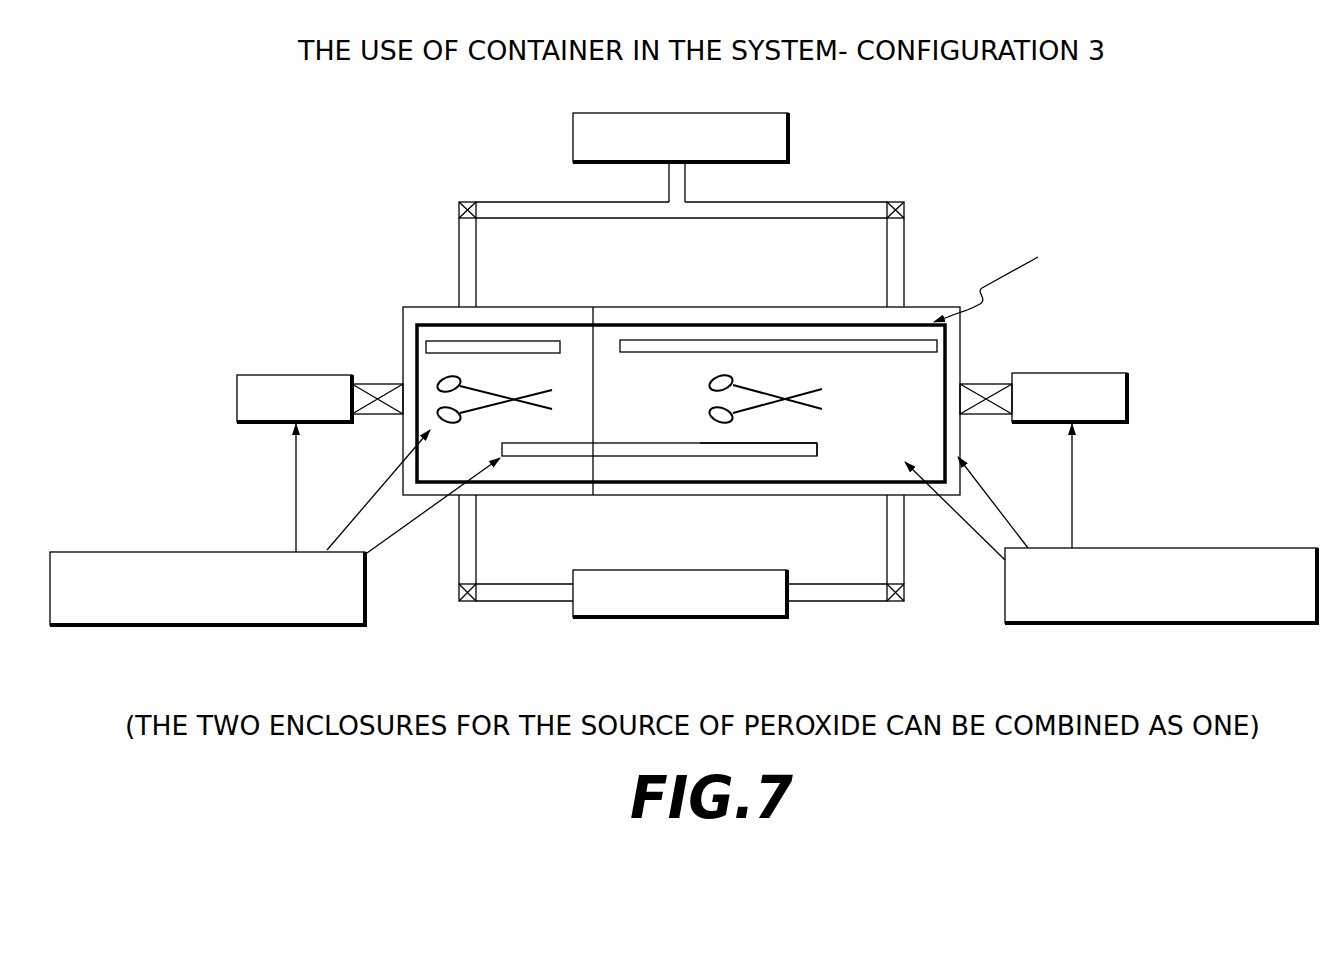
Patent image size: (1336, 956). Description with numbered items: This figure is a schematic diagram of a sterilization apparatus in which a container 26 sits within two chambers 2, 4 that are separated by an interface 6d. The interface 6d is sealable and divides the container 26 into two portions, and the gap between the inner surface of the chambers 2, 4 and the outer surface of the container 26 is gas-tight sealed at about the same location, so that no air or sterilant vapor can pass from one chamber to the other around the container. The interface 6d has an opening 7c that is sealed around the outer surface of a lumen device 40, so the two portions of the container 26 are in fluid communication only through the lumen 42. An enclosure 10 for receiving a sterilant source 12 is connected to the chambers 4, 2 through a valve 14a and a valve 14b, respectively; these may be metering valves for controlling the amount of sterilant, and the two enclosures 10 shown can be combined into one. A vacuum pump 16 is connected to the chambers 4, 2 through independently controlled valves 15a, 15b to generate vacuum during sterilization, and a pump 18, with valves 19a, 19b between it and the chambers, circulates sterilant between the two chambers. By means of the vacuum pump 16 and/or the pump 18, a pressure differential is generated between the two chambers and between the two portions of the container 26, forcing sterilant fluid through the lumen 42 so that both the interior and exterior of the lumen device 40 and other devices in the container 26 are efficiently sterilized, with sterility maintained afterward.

The chamber 2 is at (505, 325).
The chamber 4 is at (713, 325).
The interface 6d is at (594, 387).
The opening 7c is at (594, 443).
The enclosure 10 is at (682, 397).
The sterilant source 12 is at (683, 524).
The valve 14a is at (376, 383).
The valve 14b is at (979, 383).
The valve 15a is at (467, 201).
The valve 15b is at (896, 201).
The vacuum pump 16 is at (622, 112).
The pump 18 is at (680, 593).
The valve 19a is at (463, 602).
The valve 19b is at (897, 602).
The container 26 is at (948, 325).
The lumen device 40 is at (771, 443).
The lumen 42 is at (818, 450).